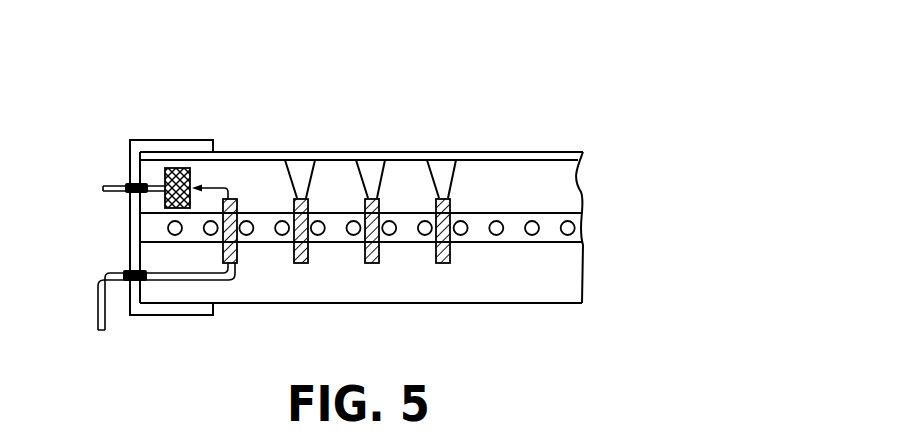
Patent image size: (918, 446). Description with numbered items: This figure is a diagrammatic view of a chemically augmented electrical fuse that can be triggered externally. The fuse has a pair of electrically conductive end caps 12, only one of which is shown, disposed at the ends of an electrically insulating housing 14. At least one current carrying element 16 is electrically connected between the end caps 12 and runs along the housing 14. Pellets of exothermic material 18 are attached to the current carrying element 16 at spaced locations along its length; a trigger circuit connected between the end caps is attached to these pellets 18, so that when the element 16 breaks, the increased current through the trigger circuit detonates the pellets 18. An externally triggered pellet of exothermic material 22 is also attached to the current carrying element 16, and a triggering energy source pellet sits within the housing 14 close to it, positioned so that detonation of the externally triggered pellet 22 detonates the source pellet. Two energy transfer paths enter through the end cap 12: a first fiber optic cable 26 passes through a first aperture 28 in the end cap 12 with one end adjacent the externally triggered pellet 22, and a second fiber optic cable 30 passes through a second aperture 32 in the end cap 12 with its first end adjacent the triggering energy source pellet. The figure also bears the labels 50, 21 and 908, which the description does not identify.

The sensing apparatus 50 is at (556, 80).
The end cap 12 is at (185, 139).
The housing 14 is at (458, 152).
The current carrying element 16 is at (513, 243).
The pellets of exothermic material 18 is at (303, 264).
The filter element 21 is at (181, 168).
The externally triggered pellet of exothermic material 22 is at (238, 268).
The first fiber optic cable 26 is at (98, 300).
The first aperture 28 is at (124, 273).
The second fiber optic cable 30 is at (103, 187).
The second aperture 32 is at (127, 184).
The funnel guides 908 is at (298, 199).